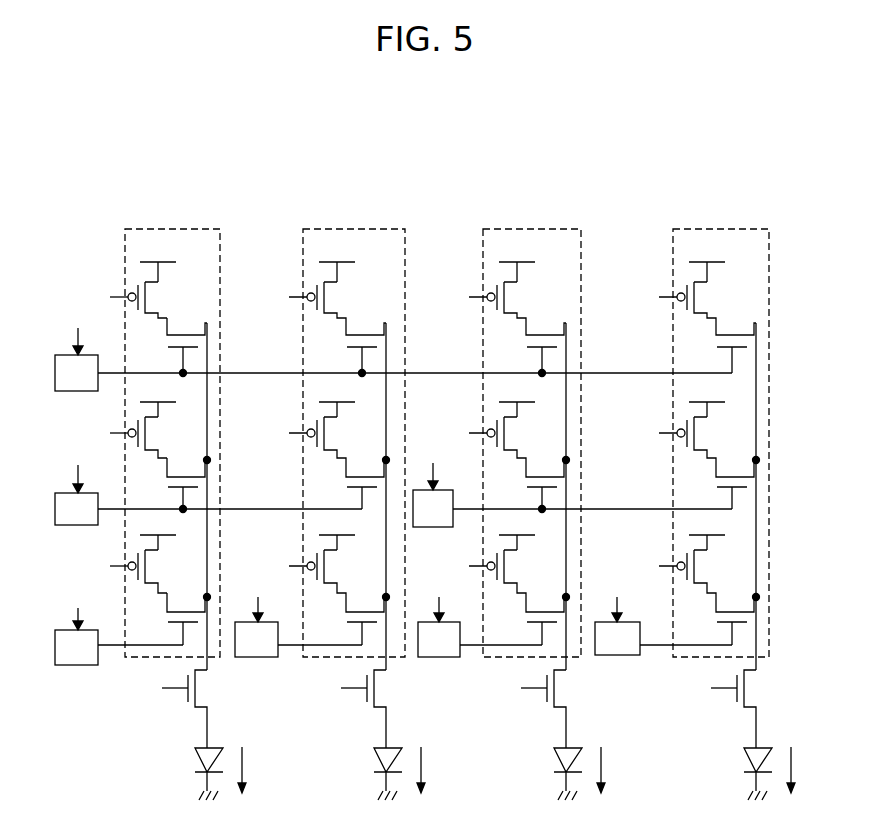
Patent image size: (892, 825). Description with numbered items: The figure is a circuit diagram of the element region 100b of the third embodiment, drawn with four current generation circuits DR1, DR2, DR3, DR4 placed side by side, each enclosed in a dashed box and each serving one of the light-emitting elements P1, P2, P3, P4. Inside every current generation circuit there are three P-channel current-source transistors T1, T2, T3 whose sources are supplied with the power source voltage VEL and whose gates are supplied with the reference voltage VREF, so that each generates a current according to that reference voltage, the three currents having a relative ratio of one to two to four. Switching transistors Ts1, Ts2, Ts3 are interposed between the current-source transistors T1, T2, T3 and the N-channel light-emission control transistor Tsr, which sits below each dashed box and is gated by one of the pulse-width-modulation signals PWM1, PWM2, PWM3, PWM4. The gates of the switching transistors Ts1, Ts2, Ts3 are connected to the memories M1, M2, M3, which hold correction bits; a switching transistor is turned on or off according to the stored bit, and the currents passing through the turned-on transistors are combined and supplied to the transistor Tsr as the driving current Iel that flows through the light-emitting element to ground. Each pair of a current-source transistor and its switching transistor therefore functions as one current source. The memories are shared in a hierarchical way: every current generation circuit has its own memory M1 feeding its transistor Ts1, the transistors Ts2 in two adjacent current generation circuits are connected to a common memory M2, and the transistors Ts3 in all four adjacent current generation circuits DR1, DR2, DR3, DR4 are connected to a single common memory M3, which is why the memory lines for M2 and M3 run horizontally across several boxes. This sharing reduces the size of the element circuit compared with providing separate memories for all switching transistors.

The element region 100b is at (742, 82).
The current generation circuit DR1 is at (150, 225).
The current generation circuit DR2 is at (329, 225).
The current generation circuit DR3 is at (509, 225).
The current generation circuit DR4 is at (699, 225).
The transistor T1 is at (152, 571).
The transistor T2 is at (152, 437).
The transistor T3 is at (152, 300).
The transistor Ts1 is at (171, 619).
The transistor Ts2 is at (171, 483).
The transistor Ts3 is at (171, 345).
The transistor Tsr is at (193, 709).
The memory M1 is at (119, 626).
The memory M2 is at (208, 484).
The memory M3 is at (393, 348).
The pulse width modulation signal PWM1 is at (144, 689).
The pulse width modulation signal PWM2 is at (323, 689).
The pulse width modulation signal PWM3 is at (503, 689).
The pulse width modulation signal PWM4 is at (693, 689).
The light-emitting element P1 is at (196, 757).
The light-emitting element P2 is at (375, 757).
The light-emitting element P3 is at (555, 757).
The light-emitting element P4 is at (745, 757).
The power source voltage VEL is at (158, 261).
The reference voltage VREF is at (96, 298).
The driving current Iel is at (252, 769).